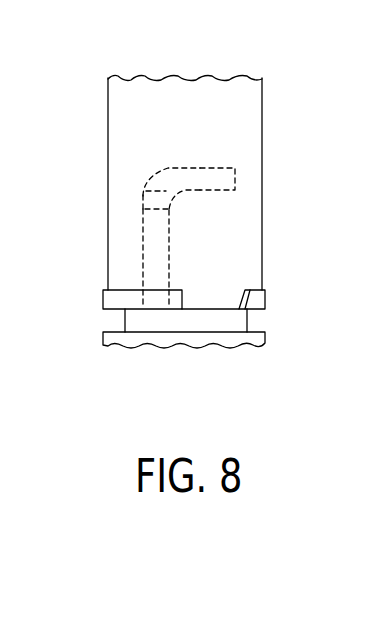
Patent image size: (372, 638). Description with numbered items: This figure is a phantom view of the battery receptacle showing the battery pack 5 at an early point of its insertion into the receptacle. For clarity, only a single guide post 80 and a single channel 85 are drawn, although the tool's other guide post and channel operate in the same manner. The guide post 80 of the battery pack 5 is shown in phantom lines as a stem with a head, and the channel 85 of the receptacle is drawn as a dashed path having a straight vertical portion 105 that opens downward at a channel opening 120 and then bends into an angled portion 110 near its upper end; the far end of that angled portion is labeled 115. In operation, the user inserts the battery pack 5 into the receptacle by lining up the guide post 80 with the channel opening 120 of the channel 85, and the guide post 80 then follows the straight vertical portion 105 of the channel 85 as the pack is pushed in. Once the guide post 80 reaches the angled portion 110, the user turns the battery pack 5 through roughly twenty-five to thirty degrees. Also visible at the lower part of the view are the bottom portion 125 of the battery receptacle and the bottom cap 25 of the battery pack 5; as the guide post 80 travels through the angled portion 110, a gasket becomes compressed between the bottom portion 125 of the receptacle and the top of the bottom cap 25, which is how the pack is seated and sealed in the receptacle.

The battery pack 5 is at (111, 347).
The bottom cap 25 is at (262, 337).
The guide post 80 is at (145, 208).
The channel 85 is at (141, 242).
The straight vertical portion 105 is at (143, 280).
The angled portion 110 is at (159, 175).
The distal end of arm 115 is at (213, 168).
The channel opening 120 is at (157, 298).
The bottom portion 125 is at (253, 307).